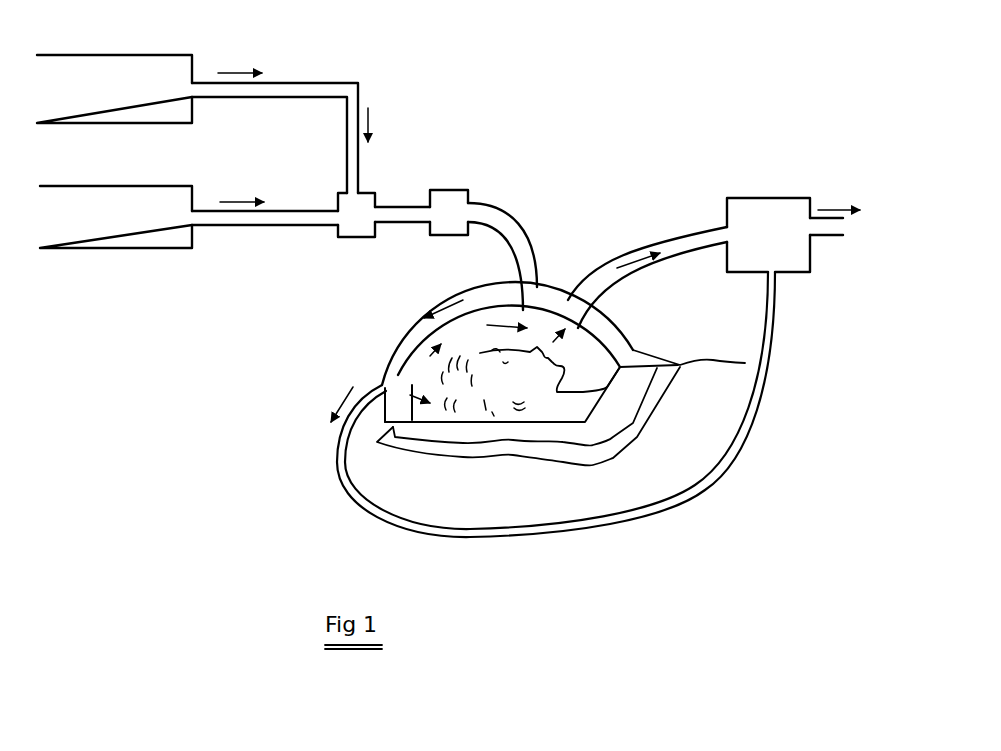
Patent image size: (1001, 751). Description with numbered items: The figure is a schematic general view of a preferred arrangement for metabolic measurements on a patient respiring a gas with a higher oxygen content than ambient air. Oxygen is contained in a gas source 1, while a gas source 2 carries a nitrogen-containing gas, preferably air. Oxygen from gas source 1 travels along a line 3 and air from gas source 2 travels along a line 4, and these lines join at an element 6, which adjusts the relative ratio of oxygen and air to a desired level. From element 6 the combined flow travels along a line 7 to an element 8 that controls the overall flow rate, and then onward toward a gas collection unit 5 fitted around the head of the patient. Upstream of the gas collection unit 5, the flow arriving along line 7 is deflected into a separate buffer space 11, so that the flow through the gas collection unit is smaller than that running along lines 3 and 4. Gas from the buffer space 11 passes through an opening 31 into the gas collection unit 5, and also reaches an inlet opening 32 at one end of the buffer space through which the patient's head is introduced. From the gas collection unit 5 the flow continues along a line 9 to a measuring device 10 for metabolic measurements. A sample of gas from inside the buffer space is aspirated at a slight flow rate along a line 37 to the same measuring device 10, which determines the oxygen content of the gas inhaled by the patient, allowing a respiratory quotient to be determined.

The gas source 1 is at (138, 68).
The gas source 2 is at (132, 233).
The line 3 is at (298, 92).
The line 4 is at (243, 230).
The gas collection unit 5 is at (416, 339).
The element 6 is at (368, 205).
The line 7 is at (400, 215).
The element 8 is at (440, 202).
The line 9 is at (683, 243).
The measuring device 10 is at (747, 217).
The buffer space 11 is at (378, 343).
The opening 31 is at (383, 382).
The inlet opening 32 is at (680, 365).
The line 37 is at (338, 457).